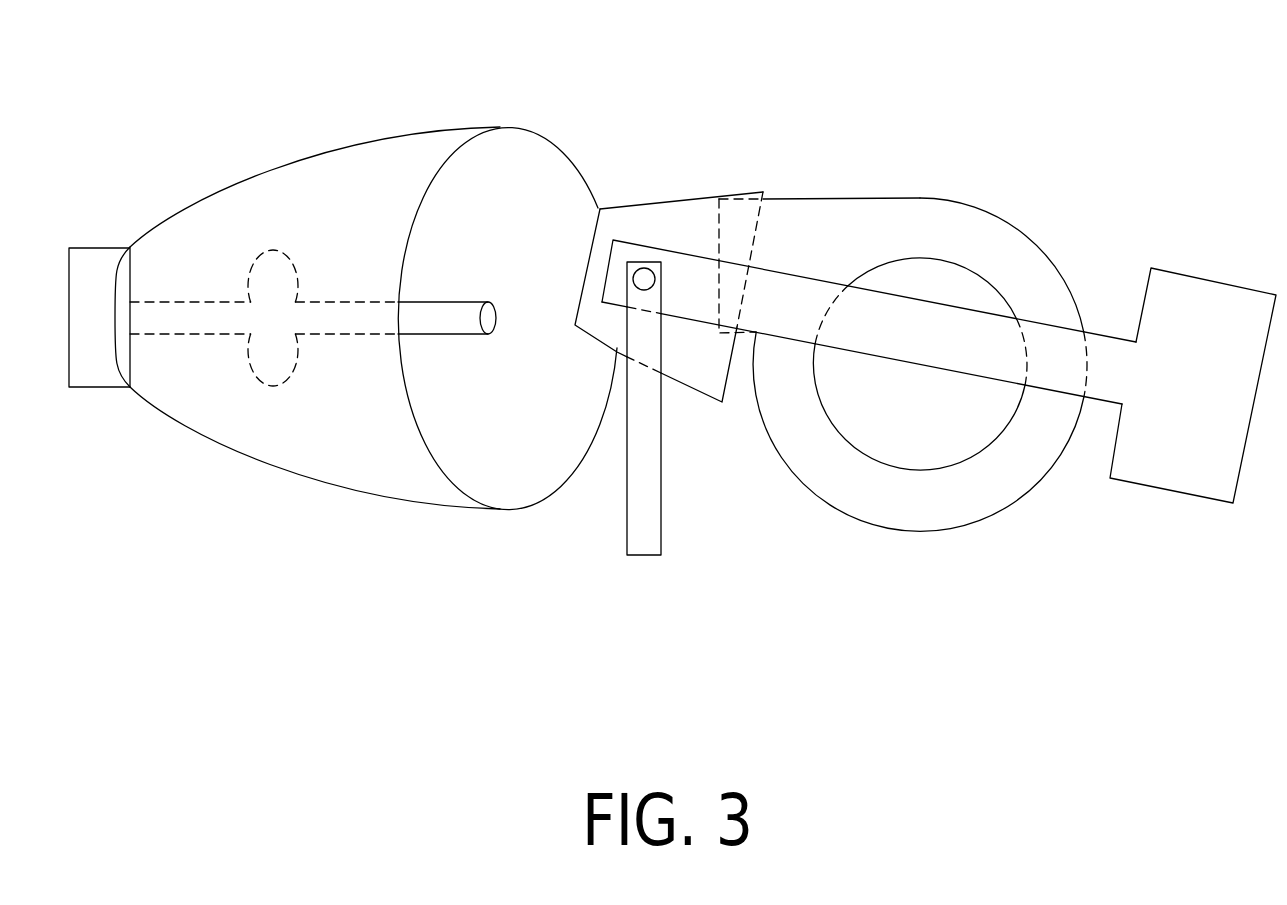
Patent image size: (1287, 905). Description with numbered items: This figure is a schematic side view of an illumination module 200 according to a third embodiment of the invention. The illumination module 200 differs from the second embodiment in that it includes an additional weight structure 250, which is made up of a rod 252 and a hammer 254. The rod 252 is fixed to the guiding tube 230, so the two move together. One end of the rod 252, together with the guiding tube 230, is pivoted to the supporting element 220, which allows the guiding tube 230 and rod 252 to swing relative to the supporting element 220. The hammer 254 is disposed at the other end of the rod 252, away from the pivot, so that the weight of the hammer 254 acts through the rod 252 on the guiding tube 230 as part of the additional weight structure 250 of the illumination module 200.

The illumination module 200 is at (672, 353).
The supporting element 220 is at (643, 548).
The guiding tube 230 is at (645, 213).
The additional weight structure 250 is at (939, 277).
The rod 252 is at (950, 199).
The hammer 254 is at (1152, 310).